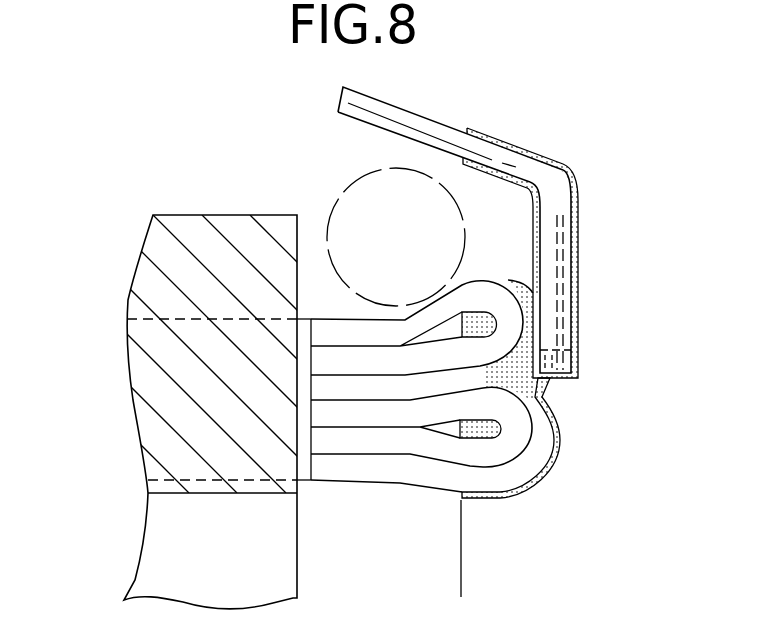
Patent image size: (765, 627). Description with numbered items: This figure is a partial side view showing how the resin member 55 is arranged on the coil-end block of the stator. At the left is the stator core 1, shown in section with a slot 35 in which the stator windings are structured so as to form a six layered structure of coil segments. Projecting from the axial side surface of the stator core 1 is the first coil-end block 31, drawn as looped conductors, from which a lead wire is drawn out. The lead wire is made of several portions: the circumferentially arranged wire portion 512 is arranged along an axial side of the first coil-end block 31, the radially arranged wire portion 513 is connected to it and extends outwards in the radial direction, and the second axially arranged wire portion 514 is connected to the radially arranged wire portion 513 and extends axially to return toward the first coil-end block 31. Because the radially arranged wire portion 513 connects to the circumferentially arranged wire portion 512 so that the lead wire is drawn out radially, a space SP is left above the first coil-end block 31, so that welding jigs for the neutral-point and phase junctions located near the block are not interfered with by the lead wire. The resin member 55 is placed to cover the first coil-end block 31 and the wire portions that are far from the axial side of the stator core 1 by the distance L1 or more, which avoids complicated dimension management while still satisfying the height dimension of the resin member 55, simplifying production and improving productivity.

The stator core 1 is at (158, 249).
The slot 35 is at (160, 318).
The first coil-end block 31 is at (389, 309).
The space SP is at (340, 204).
The second axially arranged wire portion 514 is at (380, 119).
The radially arranged wire portion 513 is at (560, 260).
The circumferentially arranged wire portion 512 is at (577, 363).
The resin member 55 is at (557, 413).
The distance L1 is at (299, 583).